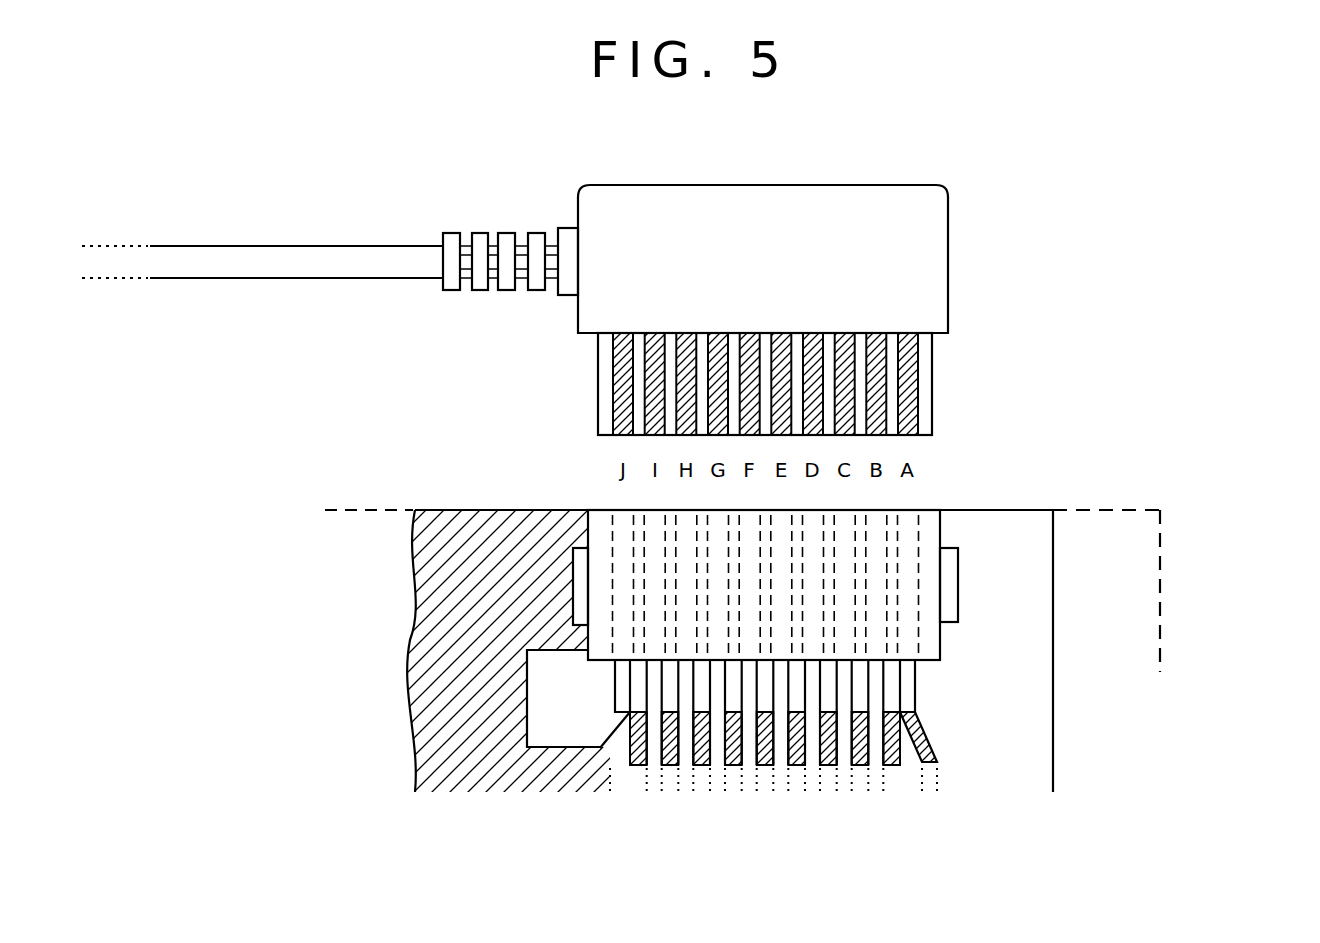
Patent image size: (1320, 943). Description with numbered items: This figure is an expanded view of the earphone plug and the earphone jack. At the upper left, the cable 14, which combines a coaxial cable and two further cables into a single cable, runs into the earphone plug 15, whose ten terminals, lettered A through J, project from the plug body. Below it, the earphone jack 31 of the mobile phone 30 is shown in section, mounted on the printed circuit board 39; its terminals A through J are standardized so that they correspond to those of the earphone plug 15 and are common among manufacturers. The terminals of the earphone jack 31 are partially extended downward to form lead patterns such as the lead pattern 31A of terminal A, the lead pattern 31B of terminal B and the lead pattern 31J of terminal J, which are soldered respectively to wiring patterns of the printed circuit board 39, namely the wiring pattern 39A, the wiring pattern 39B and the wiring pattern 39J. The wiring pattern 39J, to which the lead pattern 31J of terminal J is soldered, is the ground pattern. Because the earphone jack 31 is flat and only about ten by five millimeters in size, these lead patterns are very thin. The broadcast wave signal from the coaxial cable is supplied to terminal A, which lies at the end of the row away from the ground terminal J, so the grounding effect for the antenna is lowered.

The cable 14 is at (209, 262).
The earphone plug 15 is at (950, 265).
The mobile phone 30 is at (1137, 590).
The earphone jack 31 is at (940, 650).
The lead pattern 31A is at (908, 685).
The lead pattern 31B is at (875, 692).
The lead pattern 31J is at (622, 690).
The printed circuit board 39 is at (468, 510).
The wiring pattern 39A is at (930, 748).
The wiring pattern 39B is at (880, 740).
The wiring pattern 39J is at (617, 727).